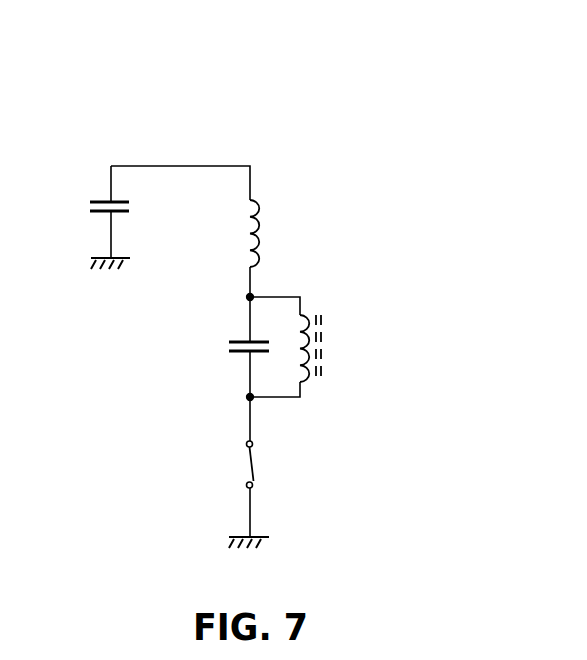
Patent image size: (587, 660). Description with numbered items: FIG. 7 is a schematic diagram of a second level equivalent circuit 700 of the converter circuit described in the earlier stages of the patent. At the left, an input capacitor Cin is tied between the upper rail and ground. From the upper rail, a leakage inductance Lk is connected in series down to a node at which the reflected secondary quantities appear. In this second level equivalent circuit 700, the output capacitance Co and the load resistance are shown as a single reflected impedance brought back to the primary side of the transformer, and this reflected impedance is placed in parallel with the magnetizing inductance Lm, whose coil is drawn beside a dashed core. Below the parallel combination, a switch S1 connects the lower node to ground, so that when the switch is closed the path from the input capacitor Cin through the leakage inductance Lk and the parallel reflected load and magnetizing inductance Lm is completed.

The second level equivalent circuit 700 is at (266, 75).
The input capacitor Cin is at (88, 217).
The leakage inductance Lk is at (306, 233).
The output capacitance Co is at (191, 336).
The magnetizing inductance Lm is at (392, 331).
The switch S1 is at (266, 464).